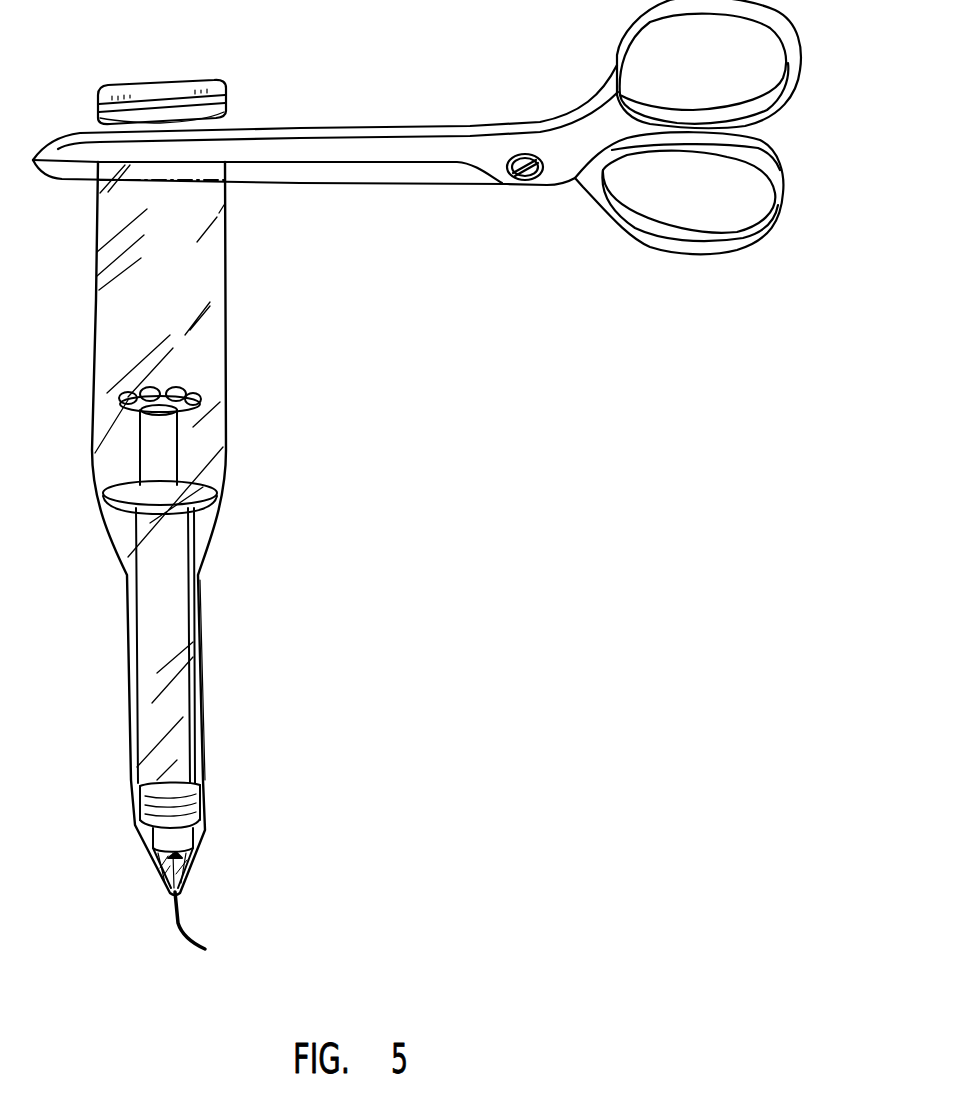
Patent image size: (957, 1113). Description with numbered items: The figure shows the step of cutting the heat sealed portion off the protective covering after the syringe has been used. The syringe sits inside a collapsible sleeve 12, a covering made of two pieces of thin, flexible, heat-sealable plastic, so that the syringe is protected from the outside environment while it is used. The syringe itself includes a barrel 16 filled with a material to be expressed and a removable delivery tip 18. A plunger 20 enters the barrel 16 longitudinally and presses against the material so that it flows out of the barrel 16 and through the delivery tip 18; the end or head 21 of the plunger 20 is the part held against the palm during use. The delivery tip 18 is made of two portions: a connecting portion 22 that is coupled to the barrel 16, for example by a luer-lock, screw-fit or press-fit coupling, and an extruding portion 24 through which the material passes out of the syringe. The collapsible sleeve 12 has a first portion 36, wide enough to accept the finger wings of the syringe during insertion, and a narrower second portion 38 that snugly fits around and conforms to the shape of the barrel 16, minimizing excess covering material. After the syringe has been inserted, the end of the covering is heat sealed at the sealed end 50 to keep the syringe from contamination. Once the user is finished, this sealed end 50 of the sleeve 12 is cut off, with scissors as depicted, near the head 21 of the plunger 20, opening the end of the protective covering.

The collapsible sleeve 12 is at (177, 642).
The barrel 16 is at (170, 706).
The delivery tip 18 is at (167, 912).
The plunger 20 is at (160, 460).
The head of the plunger 21 is at (170, 398).
The connecting portion 22 is at (173, 866).
The extruding portion 24 is at (190, 933).
The first portion 36 is at (225, 398).
The second portion 38 is at (207, 722).
The heat sealed end 50 is at (197, 82).